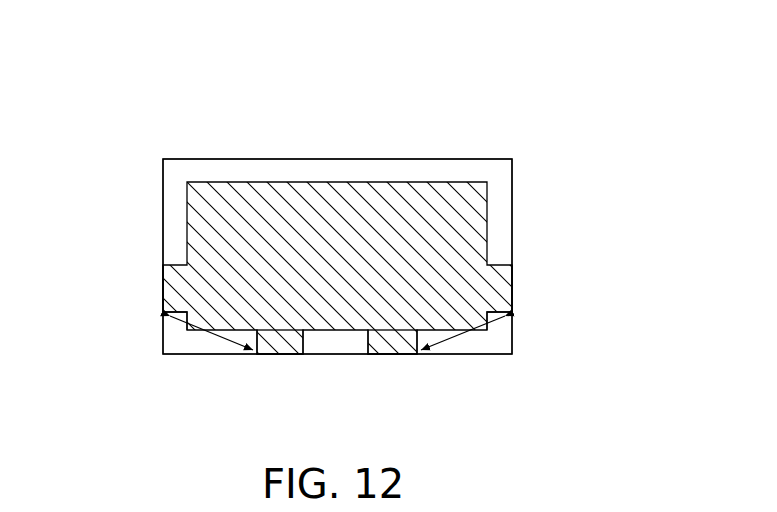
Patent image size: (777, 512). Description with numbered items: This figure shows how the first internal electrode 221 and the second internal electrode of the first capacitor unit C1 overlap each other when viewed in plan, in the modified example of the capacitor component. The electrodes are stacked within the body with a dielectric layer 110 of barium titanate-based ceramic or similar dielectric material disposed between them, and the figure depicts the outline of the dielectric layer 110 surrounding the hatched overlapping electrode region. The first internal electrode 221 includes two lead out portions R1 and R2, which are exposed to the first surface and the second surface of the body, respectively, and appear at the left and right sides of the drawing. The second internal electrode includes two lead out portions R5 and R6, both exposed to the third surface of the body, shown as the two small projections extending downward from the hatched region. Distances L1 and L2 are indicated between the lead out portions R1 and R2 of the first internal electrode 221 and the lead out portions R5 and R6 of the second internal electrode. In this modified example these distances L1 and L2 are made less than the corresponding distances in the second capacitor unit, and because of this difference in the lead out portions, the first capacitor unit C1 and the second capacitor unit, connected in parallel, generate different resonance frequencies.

The first capacitor unit C1 is at (401, 143).
The dielectric layer 110 is at (168, 192).
The first internal electrode 221 is at (283, 212).
The lead out portion R1 is at (165, 290).
The lead out portion R2 is at (512, 288).
The lead out portion R5 is at (285, 338).
The lead out portion R6 is at (394, 338).
The distance L1 is at (211, 327).
The distance L2 is at (463, 327).